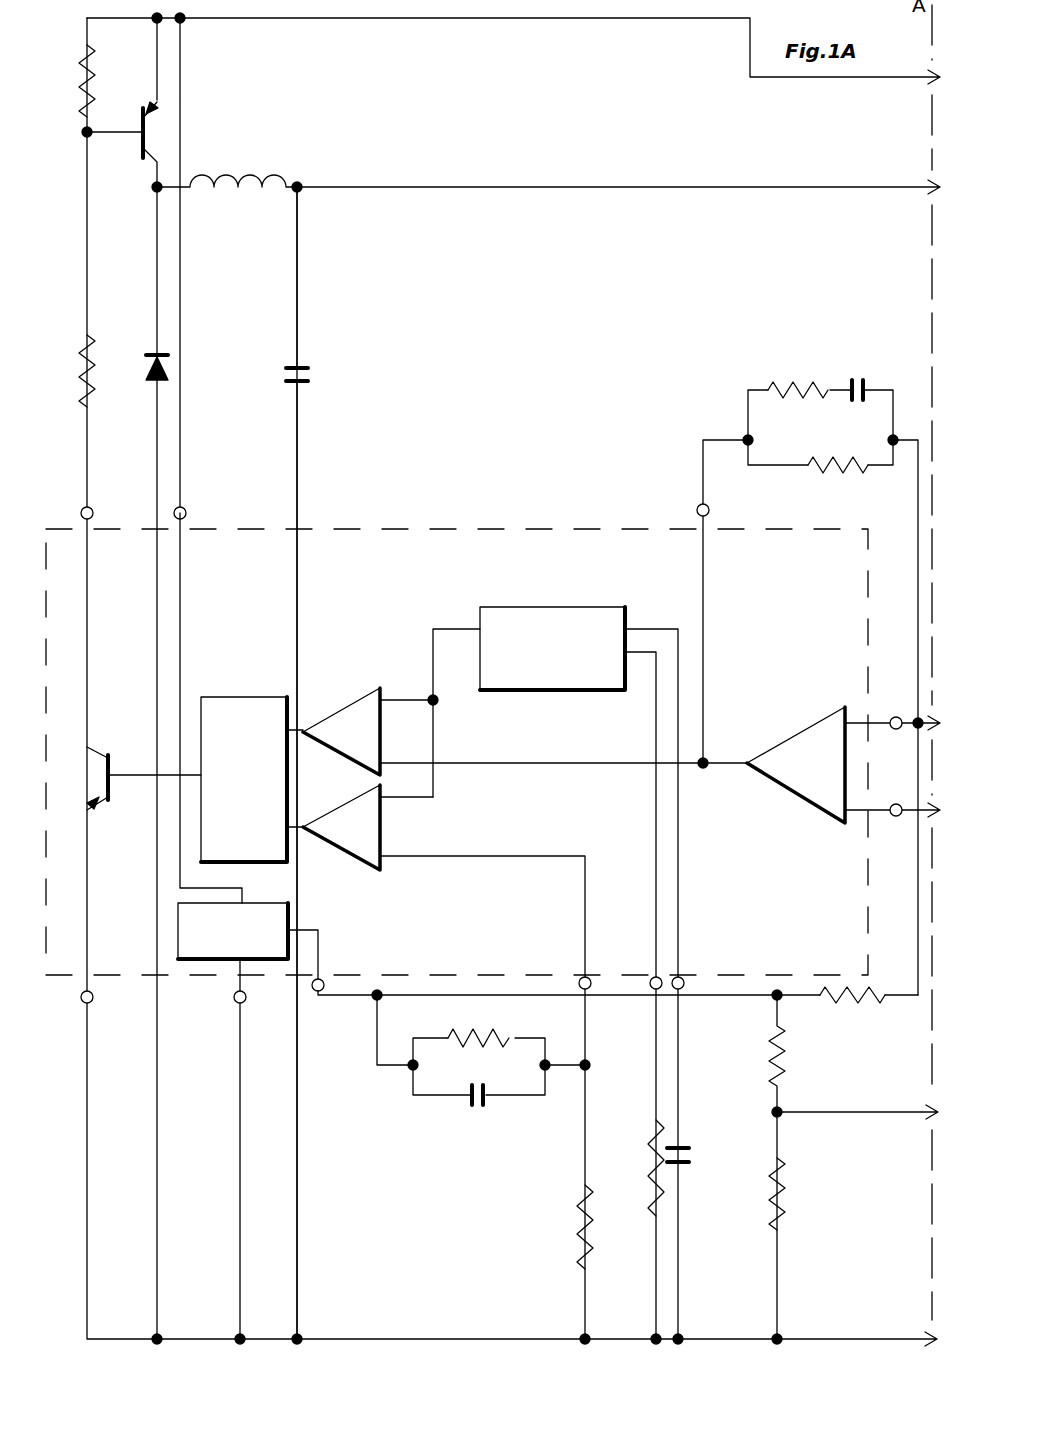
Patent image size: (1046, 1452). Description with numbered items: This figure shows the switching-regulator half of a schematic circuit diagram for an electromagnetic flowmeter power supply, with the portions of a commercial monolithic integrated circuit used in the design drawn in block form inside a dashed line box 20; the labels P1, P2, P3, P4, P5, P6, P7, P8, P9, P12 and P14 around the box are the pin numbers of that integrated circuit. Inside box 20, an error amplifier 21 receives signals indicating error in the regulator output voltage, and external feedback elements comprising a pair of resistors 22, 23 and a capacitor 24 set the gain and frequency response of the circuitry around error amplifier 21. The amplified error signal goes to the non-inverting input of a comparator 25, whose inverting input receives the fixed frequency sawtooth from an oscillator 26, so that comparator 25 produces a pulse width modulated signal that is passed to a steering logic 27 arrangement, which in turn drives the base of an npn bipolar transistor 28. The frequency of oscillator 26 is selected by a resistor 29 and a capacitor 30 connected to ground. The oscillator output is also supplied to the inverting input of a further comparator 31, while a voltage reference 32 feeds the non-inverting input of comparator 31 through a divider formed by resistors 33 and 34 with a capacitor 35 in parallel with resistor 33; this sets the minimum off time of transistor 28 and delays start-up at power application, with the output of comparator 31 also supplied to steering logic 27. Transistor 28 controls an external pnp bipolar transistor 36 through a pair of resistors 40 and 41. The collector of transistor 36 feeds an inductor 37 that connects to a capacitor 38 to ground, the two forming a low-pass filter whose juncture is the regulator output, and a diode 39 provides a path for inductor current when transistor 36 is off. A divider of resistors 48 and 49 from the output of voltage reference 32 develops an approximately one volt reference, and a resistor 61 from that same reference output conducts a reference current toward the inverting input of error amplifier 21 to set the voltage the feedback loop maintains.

The dashed line box 20 is at (547, 522).
The error amplifier 21 is at (786, 734).
The resistor 22 is at (812, 378).
The resistor 23 is at (849, 467).
The capacitor 24 is at (876, 358).
The comparator 25 is at (356, 708).
The fixed frequency oscillator 26 is at (546, 607).
The steering logic 27 is at (247, 696).
The npn bipolar transistor 28 is at (100, 790).
The resistor 29 is at (648, 1186).
The capacitor 30 is at (691, 1161).
The comparator 31 is at (354, 792).
The voltage reference 32 is at (178, 931).
The resistor 33 is at (497, 1034).
The resistor 34 is at (622, 1239).
The capacitor 35 is at (484, 1112).
The pnp bipolar transistor 36 is at (178, 147).
The inductor 37 is at (260, 164).
The capacitor 38 is at (308, 374).
The diode 39 is at (142, 373).
The resistor 40 is at (78, 93).
The resistor 41 is at (80, 370).
The voltage divider resistor 48 is at (770, 1055).
The voltage divider resistor 49 is at (770, 1185).
The resistor 61 is at (862, 1012).
The pin P1 is at (890, 825).
The pin P2 is at (892, 718).
The pin P3 is at (702, 520).
The pin P4 is at (579, 982).
The pin P5 is at (685, 982).
The pin P6 is at (650, 982).
The pin P7 is at (234, 994).
The pin P8 is at (82, 522).
The pin P9 is at (82, 997).
The pin P12 is at (198, 499).
The pin P14 is at (312, 988).